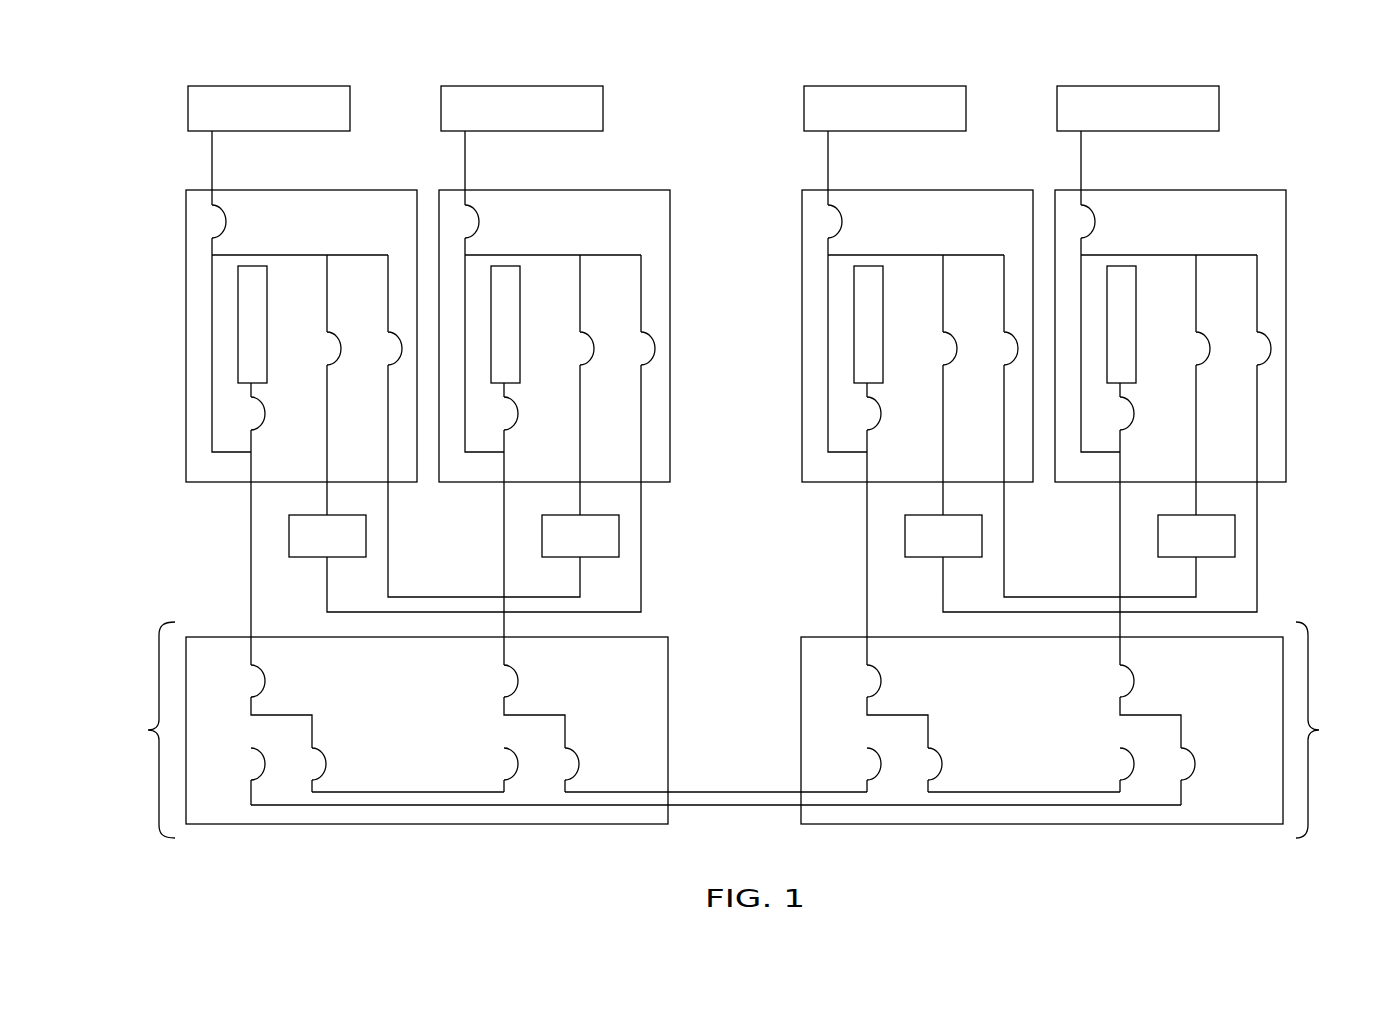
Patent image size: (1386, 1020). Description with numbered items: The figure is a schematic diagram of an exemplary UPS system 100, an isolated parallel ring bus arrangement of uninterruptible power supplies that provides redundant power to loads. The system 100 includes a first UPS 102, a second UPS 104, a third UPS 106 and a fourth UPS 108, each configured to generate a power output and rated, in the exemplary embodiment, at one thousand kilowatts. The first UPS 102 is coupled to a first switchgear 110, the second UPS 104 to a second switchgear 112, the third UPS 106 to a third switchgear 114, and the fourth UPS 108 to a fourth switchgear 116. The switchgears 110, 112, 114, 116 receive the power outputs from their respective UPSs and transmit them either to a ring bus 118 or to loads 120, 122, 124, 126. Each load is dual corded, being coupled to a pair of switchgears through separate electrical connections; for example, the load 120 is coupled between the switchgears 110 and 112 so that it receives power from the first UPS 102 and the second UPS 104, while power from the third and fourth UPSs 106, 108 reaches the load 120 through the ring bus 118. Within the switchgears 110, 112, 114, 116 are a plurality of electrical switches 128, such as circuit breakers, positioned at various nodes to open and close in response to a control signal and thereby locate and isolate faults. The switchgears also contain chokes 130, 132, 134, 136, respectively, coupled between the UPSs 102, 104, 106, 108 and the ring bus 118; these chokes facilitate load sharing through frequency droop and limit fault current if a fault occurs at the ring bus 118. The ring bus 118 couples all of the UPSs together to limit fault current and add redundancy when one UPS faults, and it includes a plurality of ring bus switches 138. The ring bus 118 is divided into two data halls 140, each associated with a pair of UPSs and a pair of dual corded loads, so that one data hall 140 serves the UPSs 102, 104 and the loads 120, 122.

The UPS system 100 is at (1027, 68).
The first UPS 102 is at (350, 108).
The second UPS 104 is at (603, 108).
The third UPS 106 is at (966, 108).
The fourth UPS 108 is at (1219, 108).
The first switchgear 110 is at (186, 218).
The second switchgear 112 is at (668, 258).
The third switchgear 114 is at (802, 218).
The fourth switchgear 116 is at (1286, 258).
The ring bus 118 is at (146, 731).
The load 120 is at (289, 535).
The load 122 is at (619, 535).
The load 124 is at (905, 535).
The load 126 is at (1235, 535).
The electrical switch 128 is at (226, 222).
The choke 130 is at (267, 350).
The choke 132 is at (520, 350).
The choke 134 is at (883, 350).
The choke 136 is at (1136, 350).
The ring bus switch 138 is at (267, 680).
The data hall 140 is at (333, 824).